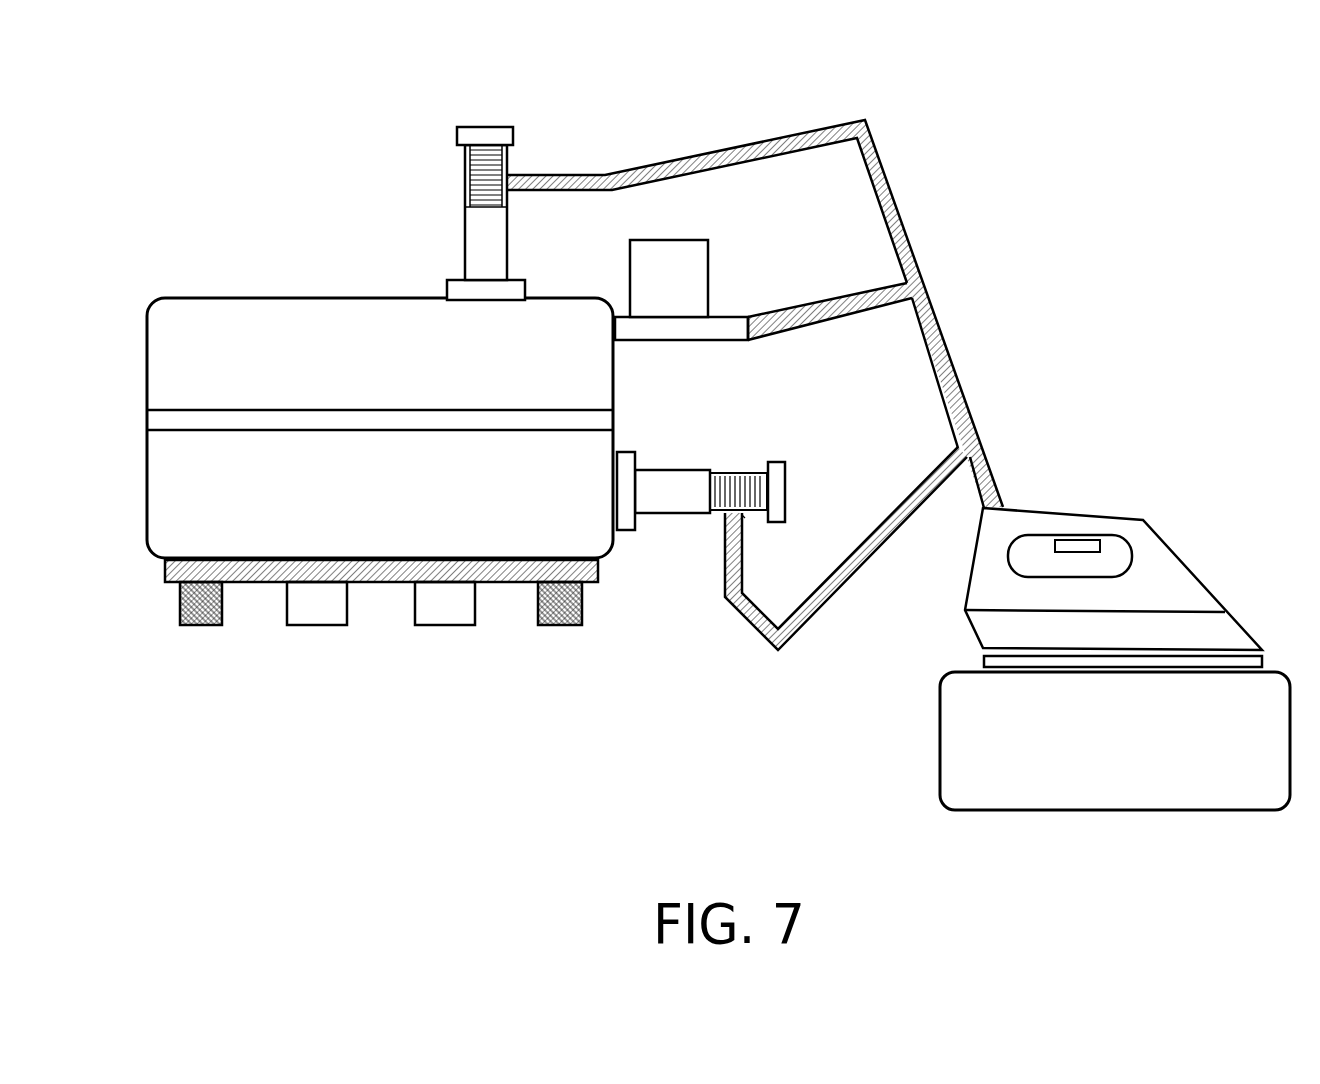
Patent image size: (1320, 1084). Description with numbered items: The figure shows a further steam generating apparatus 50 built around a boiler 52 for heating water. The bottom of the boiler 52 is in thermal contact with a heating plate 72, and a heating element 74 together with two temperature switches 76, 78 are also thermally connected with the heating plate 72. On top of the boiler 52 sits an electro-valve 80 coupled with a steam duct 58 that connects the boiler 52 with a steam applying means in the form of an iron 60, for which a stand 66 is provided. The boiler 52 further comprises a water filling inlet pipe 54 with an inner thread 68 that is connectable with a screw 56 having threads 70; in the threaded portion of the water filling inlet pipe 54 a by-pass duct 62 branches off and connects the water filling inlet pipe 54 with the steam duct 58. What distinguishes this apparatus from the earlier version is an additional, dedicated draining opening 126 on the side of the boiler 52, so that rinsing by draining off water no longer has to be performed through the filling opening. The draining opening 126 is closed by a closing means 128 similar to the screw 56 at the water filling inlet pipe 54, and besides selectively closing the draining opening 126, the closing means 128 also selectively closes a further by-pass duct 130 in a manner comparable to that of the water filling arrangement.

The steam generating apparatus 50 is at (250, 148).
The boiler 52 is at (165, 500).
The water filling inlet pipe 54 is at (515, 287).
The screw 56 is at (485, 130).
The steam duct 58 is at (810, 322).
The iron 60 is at (1172, 550).
The by-pass duct 62 is at (760, 143).
The stand 66 is at (1115, 796).
The inner thread 68 is at (470, 185).
The threads 70 is at (507, 160).
The heating plate 72 is at (600, 572).
The heating element 74 is at (200, 627).
The temperature switch 76 is at (316, 612).
The temperature switch 78 is at (445, 612).
The electro-valve 80 is at (698, 263).
The draining opening 126 is at (628, 452).
The closing means 128 is at (785, 475).
The by-pass duct 130 is at (758, 632).